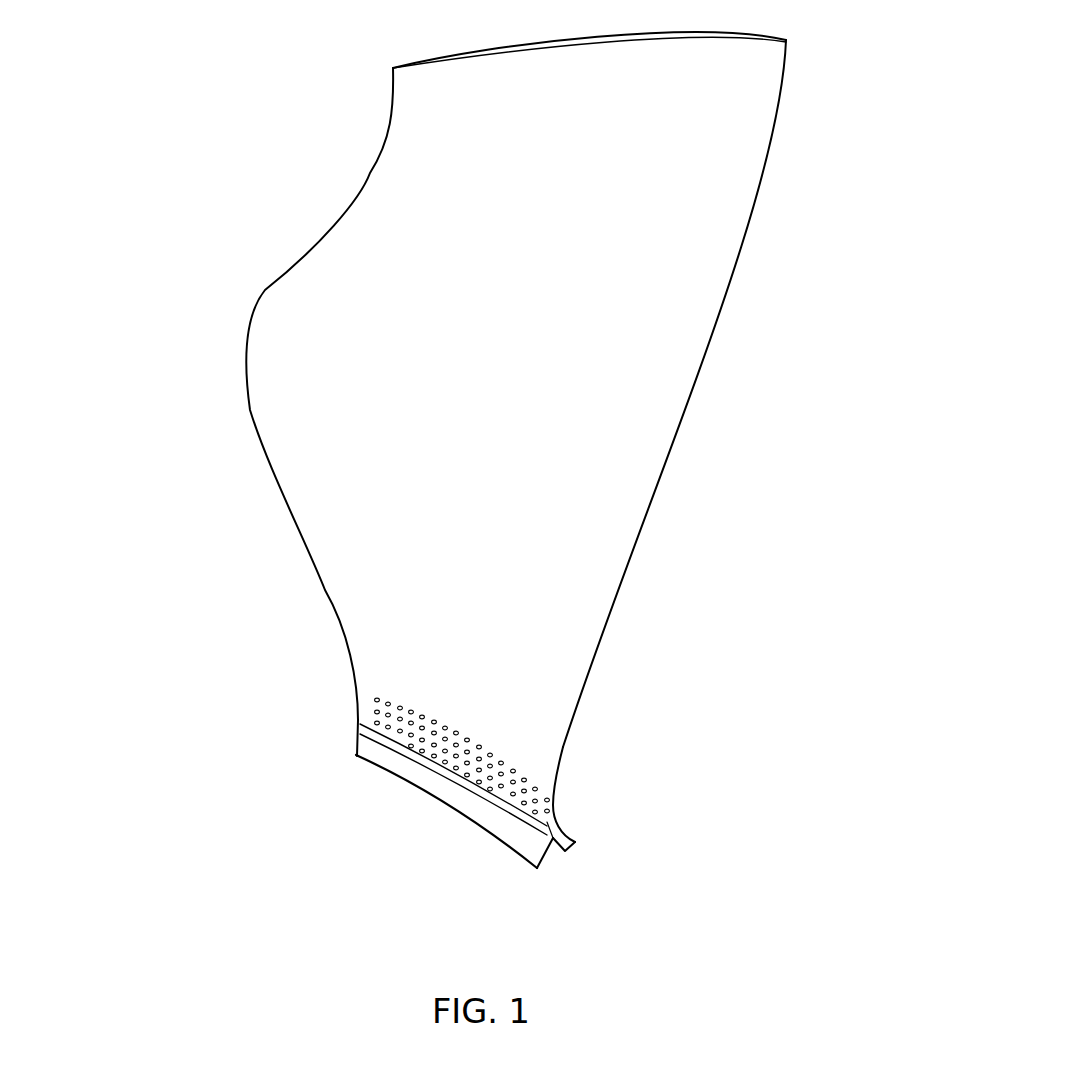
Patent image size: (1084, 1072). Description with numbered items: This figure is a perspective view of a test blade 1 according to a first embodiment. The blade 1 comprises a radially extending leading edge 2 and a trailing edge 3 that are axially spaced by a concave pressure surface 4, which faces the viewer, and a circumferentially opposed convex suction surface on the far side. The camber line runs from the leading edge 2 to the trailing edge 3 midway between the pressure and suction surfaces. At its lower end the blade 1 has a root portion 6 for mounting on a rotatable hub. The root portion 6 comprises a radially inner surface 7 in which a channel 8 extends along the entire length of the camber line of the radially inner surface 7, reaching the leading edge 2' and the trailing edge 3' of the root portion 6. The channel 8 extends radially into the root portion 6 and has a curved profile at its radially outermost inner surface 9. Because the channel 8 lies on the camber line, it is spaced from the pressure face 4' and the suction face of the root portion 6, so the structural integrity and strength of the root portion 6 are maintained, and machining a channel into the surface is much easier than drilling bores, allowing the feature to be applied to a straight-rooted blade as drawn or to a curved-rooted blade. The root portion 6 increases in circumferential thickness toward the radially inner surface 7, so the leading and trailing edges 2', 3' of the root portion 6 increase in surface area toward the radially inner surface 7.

The test blade 1 is at (213, 274).
The leading edge 2 is at (319, 394).
The trailing edge 3 is at (674, 393).
The pressure surface 4 is at (580, 425).
The leading edge of the root portion 2' is at (332, 726).
The trailing edge of the root portion 3' is at (583, 794).
The pressure face of the root portion 4' is at (451, 801).
The root portion 6 is at (626, 838).
The radially inner surface 7 is at (575, 843).
The channel 8 is at (548, 822).
The radially outermost inner surface 9 is at (537, 830).